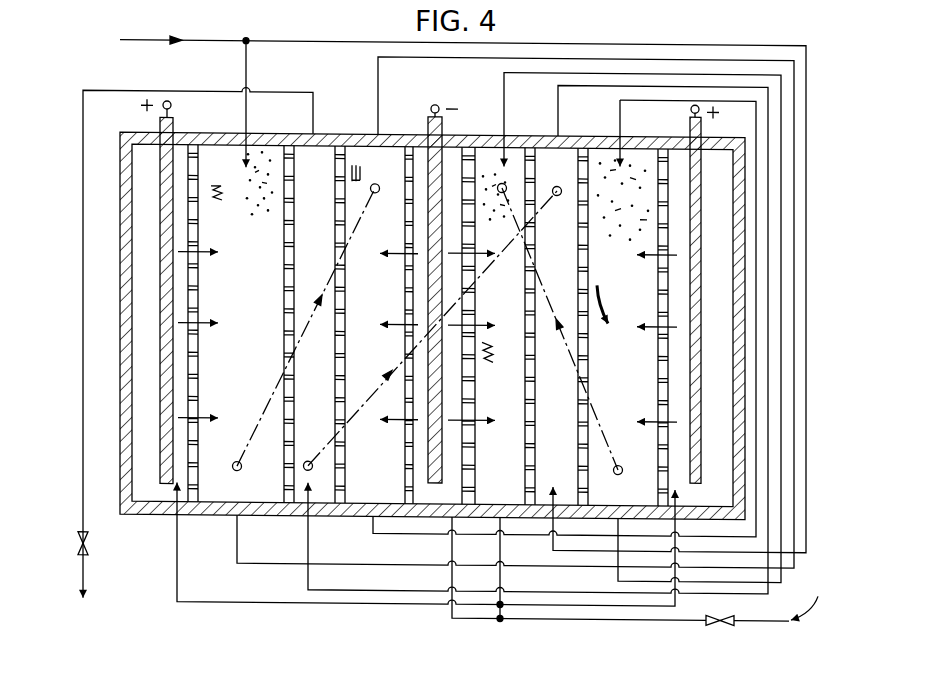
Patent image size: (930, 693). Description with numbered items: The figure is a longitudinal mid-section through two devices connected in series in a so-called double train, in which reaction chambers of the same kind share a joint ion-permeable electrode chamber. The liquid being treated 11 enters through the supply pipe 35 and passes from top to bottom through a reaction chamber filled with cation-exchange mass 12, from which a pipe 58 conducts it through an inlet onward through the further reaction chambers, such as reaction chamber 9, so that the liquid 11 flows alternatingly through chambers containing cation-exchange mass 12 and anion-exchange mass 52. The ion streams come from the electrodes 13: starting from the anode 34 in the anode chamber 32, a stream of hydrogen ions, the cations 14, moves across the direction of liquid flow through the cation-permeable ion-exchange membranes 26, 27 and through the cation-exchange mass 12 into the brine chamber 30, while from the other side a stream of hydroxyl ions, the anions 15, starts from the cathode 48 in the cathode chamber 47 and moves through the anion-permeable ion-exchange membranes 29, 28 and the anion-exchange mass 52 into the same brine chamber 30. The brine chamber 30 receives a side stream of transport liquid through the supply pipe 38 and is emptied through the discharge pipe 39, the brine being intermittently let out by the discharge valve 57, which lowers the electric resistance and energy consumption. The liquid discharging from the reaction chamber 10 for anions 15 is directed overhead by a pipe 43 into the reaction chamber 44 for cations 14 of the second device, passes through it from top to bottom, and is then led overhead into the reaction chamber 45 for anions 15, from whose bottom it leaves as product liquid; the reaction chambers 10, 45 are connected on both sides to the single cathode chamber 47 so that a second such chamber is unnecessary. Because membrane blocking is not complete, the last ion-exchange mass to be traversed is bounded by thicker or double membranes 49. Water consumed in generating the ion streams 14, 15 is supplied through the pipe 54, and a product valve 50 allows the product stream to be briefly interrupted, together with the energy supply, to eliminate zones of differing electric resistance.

The reaction chamber 9 is at (232, 382).
The reaction chamber for anions 10 is at (354, 381).
The liquid being treated 11 is at (215, 196).
The cation-exchange mass 12 is at (263, 203).
The electrodes 13 is at (171, 104).
The cations 14 is at (217, 318).
The anions 15 is at (383, 320).
The cation-permeable ion-exchange membrane 26 is at (198, 480).
The cation-permeable ion-exchange membrane 27 is at (580, 418).
The anion-permeable ion-exchange membrane 28 is at (338, 405).
The anion-permeable ion-exchange membrane 29 is at (402, 475).
The brine chamber 30 is at (299, 381).
The anode chamber 32 is at (180, 366).
The anode 34 is at (172, 347).
The supply pipe 35 is at (247, 117).
The supply pipe 38 is at (330, 40).
The discharge pipe 39 is at (87, 582).
The pipe 43 is at (613, 110).
The reaction chamber for cations 44 is at (612, 398).
The reaction chamber for anions 45 is at (487, 399).
The cathode chamber 47 is at (412, 455).
The cathode 48 is at (412, 426).
The double membranes 49 is at (475, 428).
The product valve 50 is at (724, 619).
The anion-exchange mass 52 is at (390, 173).
The pipe 54 is at (200, 602).
The discharge valve 57 is at (80, 546).
The pipe 58 is at (327, 274).